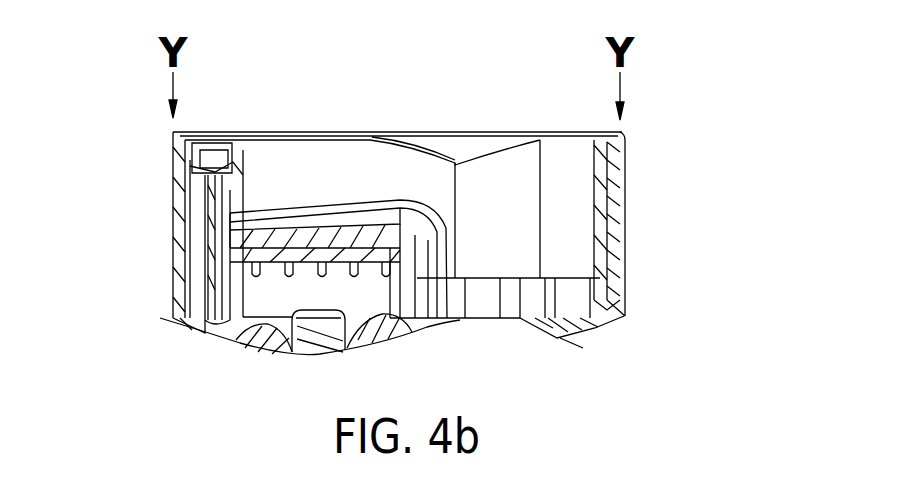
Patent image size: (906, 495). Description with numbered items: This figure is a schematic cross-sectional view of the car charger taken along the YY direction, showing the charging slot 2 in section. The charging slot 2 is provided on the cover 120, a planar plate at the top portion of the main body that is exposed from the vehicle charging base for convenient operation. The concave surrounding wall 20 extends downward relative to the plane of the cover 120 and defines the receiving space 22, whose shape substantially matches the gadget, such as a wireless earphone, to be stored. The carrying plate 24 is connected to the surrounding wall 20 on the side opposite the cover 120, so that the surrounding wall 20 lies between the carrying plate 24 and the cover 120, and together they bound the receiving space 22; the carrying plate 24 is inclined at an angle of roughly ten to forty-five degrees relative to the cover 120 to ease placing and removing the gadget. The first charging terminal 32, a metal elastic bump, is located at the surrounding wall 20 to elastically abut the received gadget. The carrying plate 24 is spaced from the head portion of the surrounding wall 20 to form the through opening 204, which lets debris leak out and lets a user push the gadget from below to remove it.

The charging slot 2 is at (365, 67).
The surrounding wall 20 is at (237, 142).
The receiving space 22 is at (300, 160).
The carrying plate 24 is at (350, 205).
The first charging terminal 32 is at (194, 168).
The cover 120 is at (625, 141).
The through opening 204 is at (500, 268).